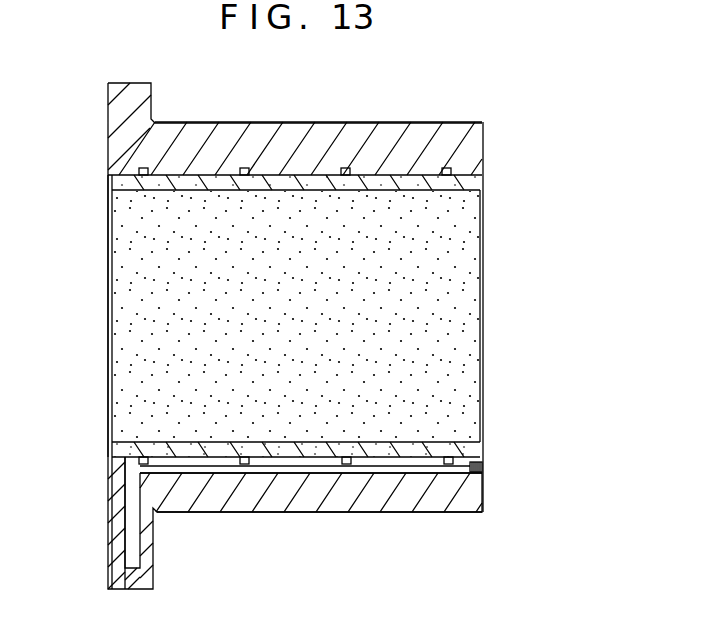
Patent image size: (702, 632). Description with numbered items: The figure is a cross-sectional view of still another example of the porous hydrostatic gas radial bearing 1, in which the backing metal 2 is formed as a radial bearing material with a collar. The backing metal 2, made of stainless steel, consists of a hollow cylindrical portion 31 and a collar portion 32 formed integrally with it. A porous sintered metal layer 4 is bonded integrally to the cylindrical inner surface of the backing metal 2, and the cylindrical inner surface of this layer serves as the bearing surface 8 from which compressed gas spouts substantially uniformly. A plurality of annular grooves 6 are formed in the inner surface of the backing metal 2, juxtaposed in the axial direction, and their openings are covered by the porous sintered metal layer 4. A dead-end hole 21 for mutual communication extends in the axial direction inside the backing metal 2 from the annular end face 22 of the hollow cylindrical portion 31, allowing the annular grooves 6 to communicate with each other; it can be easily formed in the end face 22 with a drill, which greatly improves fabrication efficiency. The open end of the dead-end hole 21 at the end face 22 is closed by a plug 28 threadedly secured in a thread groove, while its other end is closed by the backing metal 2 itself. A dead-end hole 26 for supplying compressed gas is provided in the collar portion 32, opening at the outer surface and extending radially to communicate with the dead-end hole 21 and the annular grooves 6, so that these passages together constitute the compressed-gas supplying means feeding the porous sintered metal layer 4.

The porous hydrostatic gas radial bearing 1 is at (66, 138).
The backing metal 2 is at (405, 121).
The porous sintered metal layer 4 is at (470, 442).
The annular grooves 6 is at (449, 168).
The bearing surface 8 is at (458, 286).
The dead-end hole for mutual communication 21 is at (313, 476).
The annular end face 22 is at (484, 227).
The dead-end hole for supplying a compressed gas 26 is at (128, 546).
The plug 28 is at (484, 466).
The hollow cylindrical portion 31 is at (372, 495).
The collar portion 32 is at (118, 515).